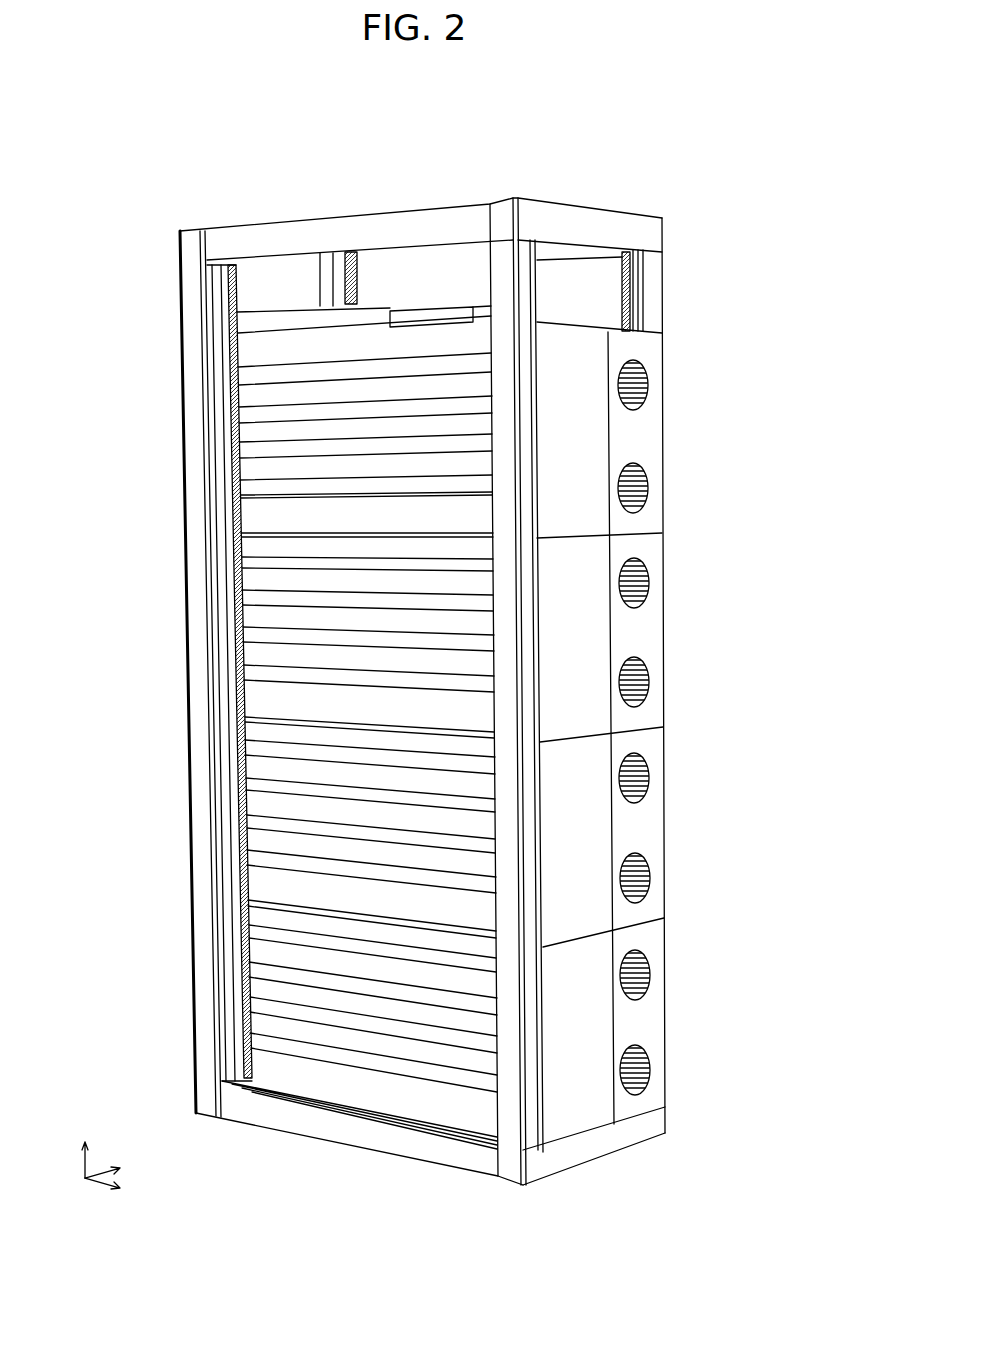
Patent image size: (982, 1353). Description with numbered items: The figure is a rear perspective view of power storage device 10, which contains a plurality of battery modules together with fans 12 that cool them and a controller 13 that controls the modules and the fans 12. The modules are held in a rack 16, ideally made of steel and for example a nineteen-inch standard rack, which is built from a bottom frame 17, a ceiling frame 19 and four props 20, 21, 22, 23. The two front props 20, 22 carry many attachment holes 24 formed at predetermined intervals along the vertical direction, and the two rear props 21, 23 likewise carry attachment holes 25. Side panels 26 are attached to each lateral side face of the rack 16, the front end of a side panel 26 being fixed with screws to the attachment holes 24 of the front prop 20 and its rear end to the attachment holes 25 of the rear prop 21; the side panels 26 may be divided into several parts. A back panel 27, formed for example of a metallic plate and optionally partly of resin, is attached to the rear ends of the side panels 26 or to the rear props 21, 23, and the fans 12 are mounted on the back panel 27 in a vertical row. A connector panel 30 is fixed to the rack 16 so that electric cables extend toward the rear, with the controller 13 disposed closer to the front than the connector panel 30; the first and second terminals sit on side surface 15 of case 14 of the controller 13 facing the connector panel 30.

The power storage device 10 is at (690, 106).
The fan 12 is at (645, 383).
The controller 13 is at (238, 609).
The case 14 is at (280, 292).
The side surface 15 is at (400, 306).
The rack 16 is at (180, 226).
The bottom frame 17 is at (385, 1137).
The ceiling frame 19 is at (590, 222).
The prop 20 is at (190, 310).
The prop 21 is at (528, 1048).
The prop 22 is at (324, 262).
The prop 23 is at (652, 272).
The attachment hole 24 is at (218, 326).
The attachment hole 25 is at (632, 298).
The side panel 26 is at (262, 517).
The back panel 27 is at (640, 622).
The connector panel 30 is at (424, 318).